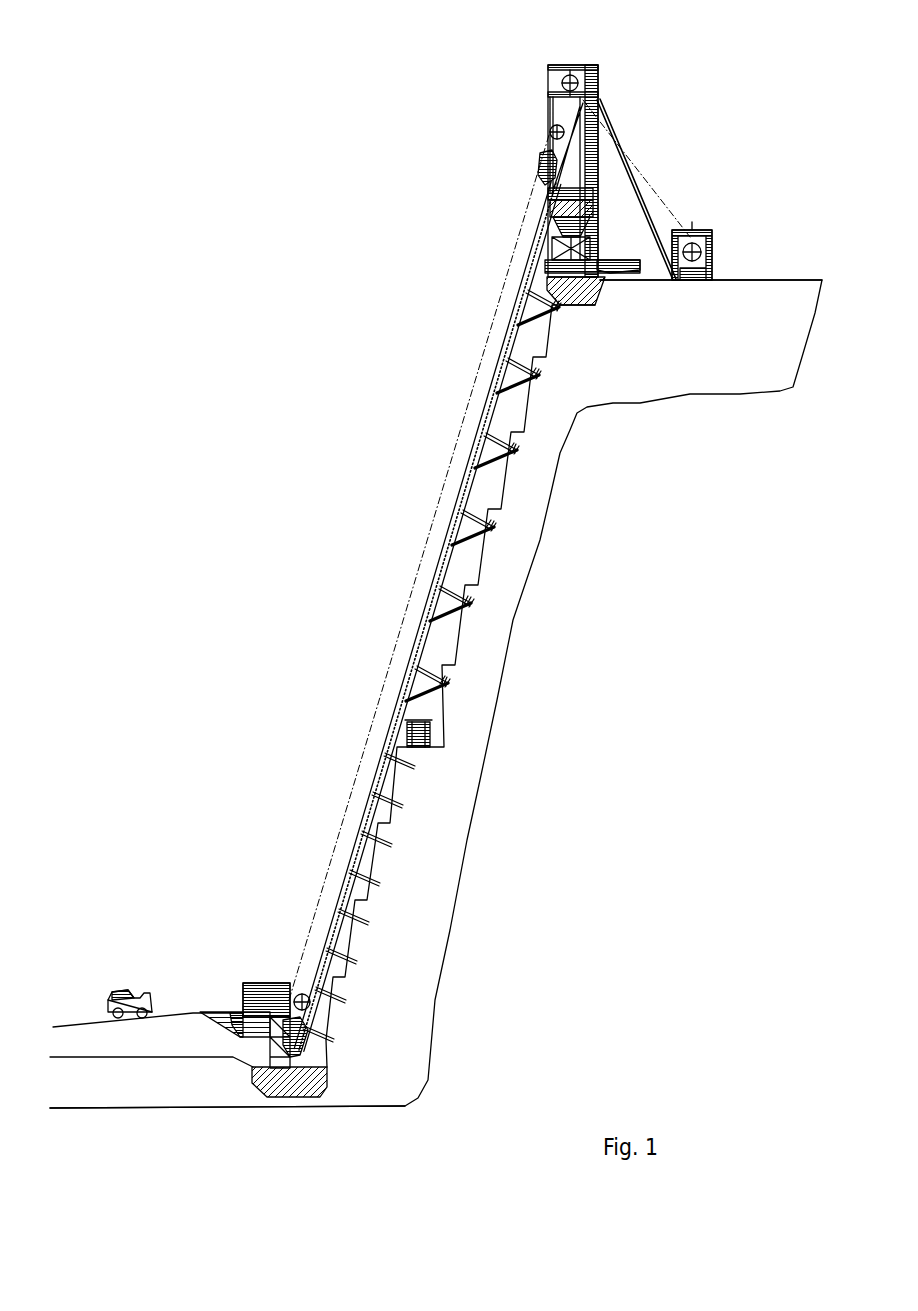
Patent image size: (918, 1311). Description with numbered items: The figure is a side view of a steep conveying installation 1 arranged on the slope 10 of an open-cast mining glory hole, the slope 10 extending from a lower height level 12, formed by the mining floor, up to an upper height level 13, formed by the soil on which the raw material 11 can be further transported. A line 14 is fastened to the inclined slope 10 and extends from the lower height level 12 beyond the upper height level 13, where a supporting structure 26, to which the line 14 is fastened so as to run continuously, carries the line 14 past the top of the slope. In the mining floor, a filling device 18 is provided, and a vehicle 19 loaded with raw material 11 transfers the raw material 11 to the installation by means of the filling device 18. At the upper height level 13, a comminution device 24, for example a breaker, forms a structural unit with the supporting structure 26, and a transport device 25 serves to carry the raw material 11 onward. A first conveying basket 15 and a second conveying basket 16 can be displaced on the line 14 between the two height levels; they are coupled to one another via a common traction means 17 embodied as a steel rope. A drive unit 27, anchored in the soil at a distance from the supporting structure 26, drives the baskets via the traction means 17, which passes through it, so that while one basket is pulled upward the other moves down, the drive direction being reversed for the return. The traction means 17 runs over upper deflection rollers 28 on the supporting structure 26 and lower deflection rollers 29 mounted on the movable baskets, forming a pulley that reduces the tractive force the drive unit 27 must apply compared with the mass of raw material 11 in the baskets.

The steep conveying installation 1 is at (333, 497).
The slope 10 is at (573, 420).
The raw material 11 is at (538, 163).
The lower height level 12 is at (403, 1063).
The upper height level 13 is at (815, 267).
The line 14 is at (452, 553).
The first conveying basket 15 is at (528, 182).
The second conveying basket 16 is at (290, 1080).
The traction means 17 is at (674, 210).
The filling device 18 is at (278, 983).
The vehicle 19 is at (150, 987).
The comminution device 24 is at (597, 167).
The transport device 25 is at (615, 260).
The supporting structure 26 is at (597, 75).
The drive unit 27 is at (702, 251).
The upper deflection rollers 28 is at (566, 79).
The lower deflection rollers 29 is at (551, 130).